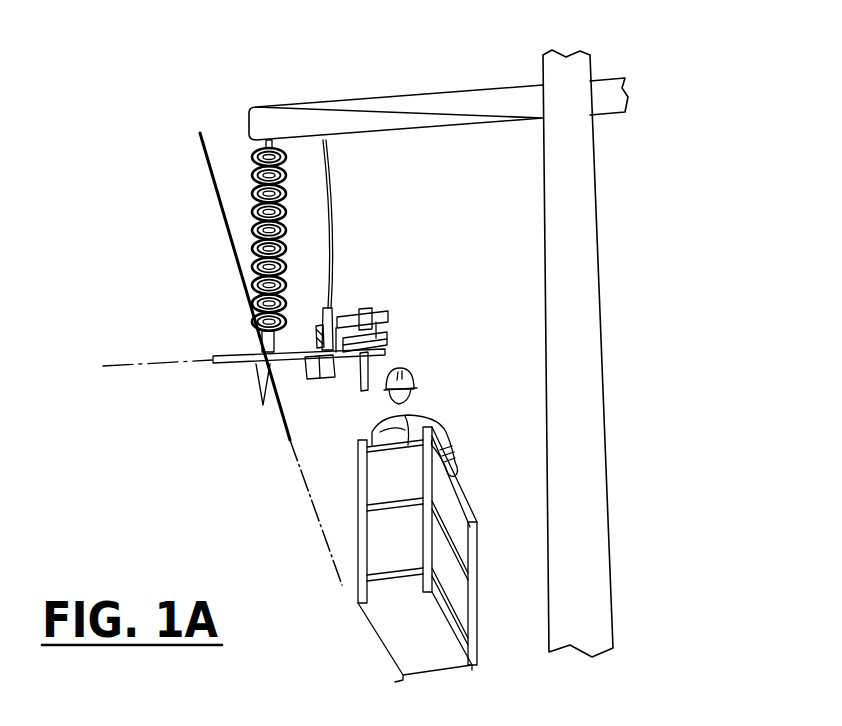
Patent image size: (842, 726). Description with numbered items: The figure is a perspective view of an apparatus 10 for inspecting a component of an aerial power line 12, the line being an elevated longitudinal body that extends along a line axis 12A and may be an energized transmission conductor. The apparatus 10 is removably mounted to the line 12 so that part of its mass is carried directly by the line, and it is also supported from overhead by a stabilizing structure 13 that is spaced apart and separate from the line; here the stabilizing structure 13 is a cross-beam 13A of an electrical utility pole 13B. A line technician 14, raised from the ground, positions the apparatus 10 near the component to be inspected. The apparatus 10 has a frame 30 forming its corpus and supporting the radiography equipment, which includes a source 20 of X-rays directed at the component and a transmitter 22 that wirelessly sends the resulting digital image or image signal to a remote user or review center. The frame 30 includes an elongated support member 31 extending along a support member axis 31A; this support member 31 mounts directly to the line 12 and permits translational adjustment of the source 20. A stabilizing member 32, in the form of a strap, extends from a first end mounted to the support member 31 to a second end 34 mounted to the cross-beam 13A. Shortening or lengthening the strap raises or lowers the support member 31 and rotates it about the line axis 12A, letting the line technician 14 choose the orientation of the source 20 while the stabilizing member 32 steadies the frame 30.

The apparatus 10 is at (259, 342).
The aerial power line 12 is at (246, 359).
The line axis 12A is at (312, 500).
The stabilizing structure 13 is at (460, 330).
The cross-beam 13A is at (397, 96).
The electrical utility pole 13B is at (578, 202).
The line technician 14 is at (430, 418).
The source 20 is at (378, 322).
The transmitter 22 is at (319, 366).
The frame 30 is at (213, 384).
The support member 31 is at (234, 359).
The support member axis 31A is at (113, 368).
The stabilizing member 32 is at (334, 232).
The second end 34 is at (355, 224).